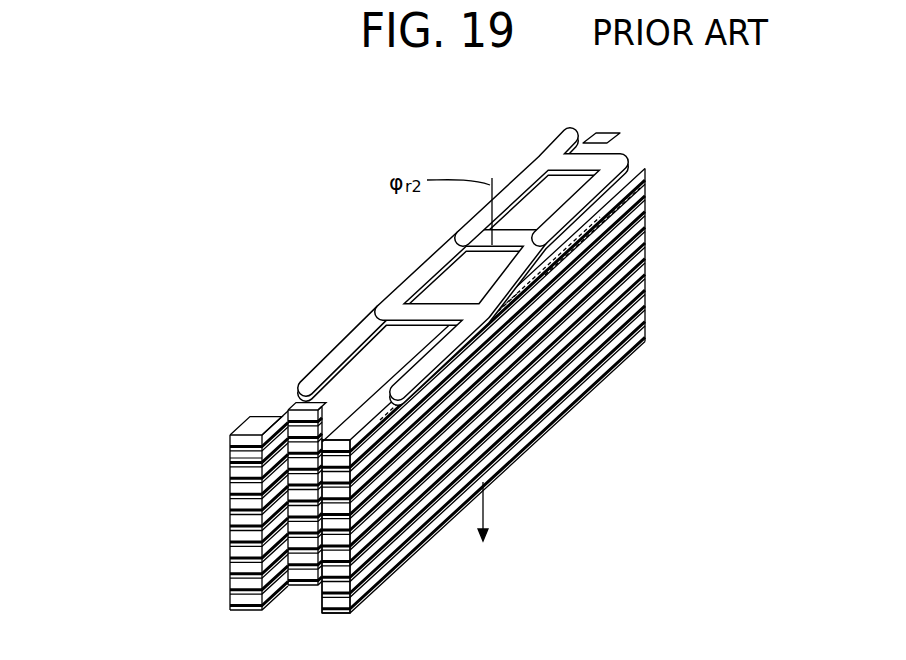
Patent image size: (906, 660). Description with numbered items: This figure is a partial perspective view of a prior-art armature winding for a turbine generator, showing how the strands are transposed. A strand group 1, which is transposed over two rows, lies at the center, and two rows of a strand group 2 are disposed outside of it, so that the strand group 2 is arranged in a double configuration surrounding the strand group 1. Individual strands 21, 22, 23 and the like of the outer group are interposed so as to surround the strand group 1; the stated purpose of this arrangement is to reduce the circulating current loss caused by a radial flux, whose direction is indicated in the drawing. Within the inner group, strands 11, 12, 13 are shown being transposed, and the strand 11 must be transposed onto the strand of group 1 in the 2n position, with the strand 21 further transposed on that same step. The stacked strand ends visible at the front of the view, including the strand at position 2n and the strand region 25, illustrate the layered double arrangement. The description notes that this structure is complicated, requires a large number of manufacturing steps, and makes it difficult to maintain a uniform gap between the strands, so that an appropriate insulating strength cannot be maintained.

The strand group 1 is at (476, 245).
The strand group 2 is at (642, 242).
The strand 11 is at (343, 400).
The strand 12 is at (453, 275).
The strand 13 is at (547, 170).
The strand 21 is at (362, 412).
The strand 22 is at (433, 350).
The strand 23 is at (532, 262).
The yoke portion 25 is at (403, 560).
The 2n-th lamination 2n is at (349, 607).